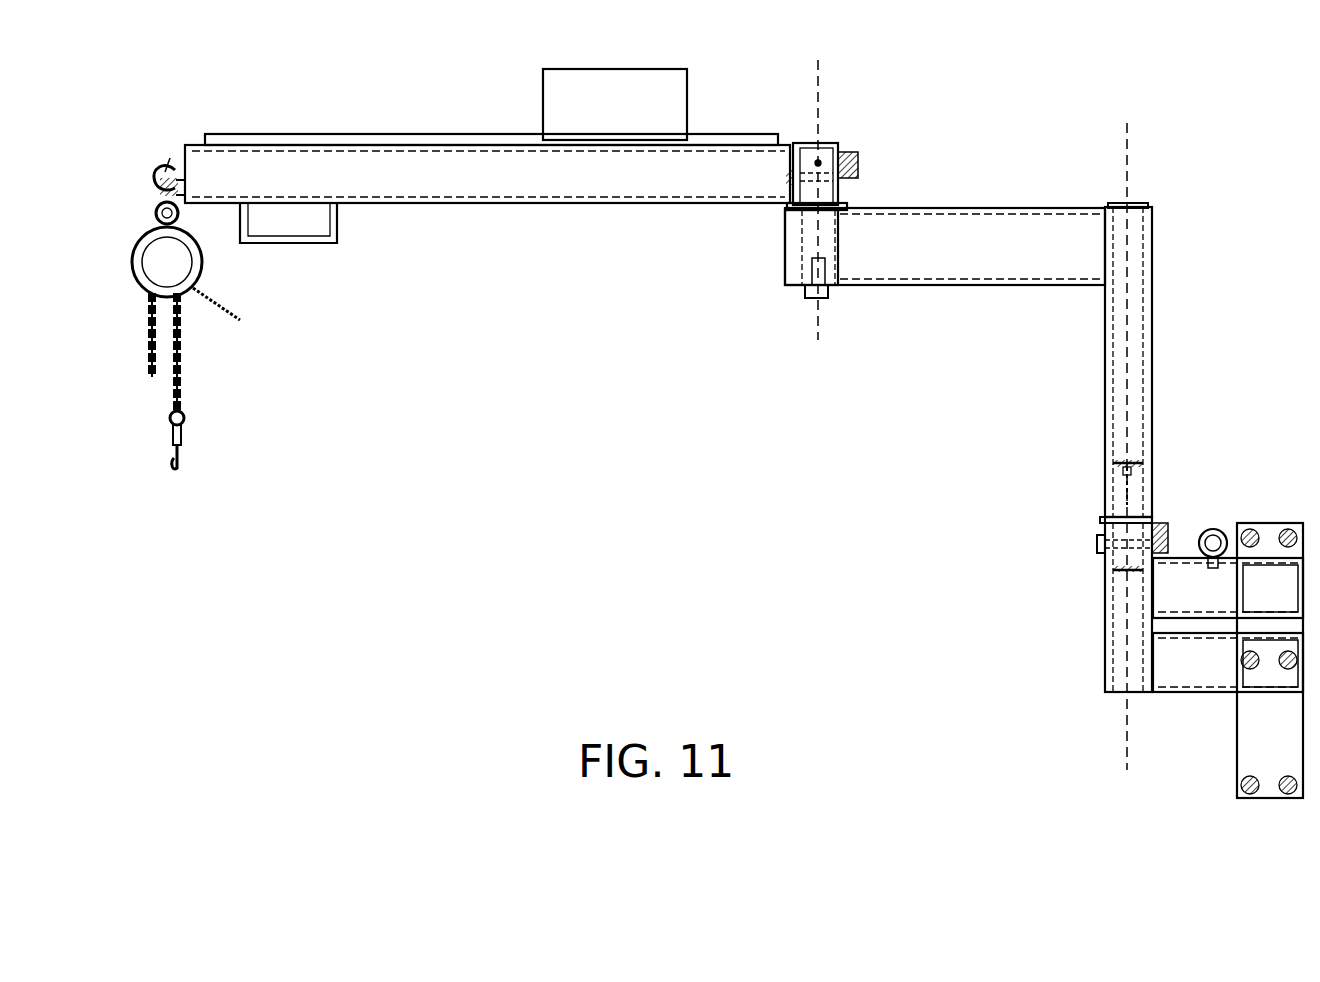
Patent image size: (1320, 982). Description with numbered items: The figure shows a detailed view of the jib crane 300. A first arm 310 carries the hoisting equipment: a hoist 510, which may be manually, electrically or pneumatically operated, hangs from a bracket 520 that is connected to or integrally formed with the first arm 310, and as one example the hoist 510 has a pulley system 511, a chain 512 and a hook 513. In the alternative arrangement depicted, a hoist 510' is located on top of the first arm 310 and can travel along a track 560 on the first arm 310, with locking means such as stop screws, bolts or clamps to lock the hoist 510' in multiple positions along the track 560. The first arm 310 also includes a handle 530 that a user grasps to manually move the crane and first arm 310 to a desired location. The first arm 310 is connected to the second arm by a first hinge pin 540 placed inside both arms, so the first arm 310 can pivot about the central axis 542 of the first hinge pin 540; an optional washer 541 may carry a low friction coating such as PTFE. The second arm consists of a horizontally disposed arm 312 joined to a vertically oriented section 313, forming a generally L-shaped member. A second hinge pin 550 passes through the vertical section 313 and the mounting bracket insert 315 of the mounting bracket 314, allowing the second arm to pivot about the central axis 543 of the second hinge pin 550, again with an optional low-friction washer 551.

The jib crane 300 is at (1196, 162).
The first arm 310 is at (521, 186).
The horizontally disposed arm 312 is at (982, 260).
The vertically oriented section 313 is at (1140, 318).
The mounting bracket 314 is at (1255, 748).
The mounting bracket insert 315 is at (1115, 648).
The hoist 510 is at (244, 313).
The hoist 510' is at (615, 104).
The pulley system 511 is at (162, 258).
The chain 512 is at (150, 352).
The hook 513 is at (180, 458).
The bracket 520 is at (172, 170).
The handle 530 is at (305, 245).
The first hinge pin 540 is at (798, 240).
The washer 541 is at (840, 200).
The central axis 542 is at (820, 78).
The central axis 543 is at (1127, 143).
The second hinge pin 550 is at (1135, 490).
The washer 551 is at (1105, 518).
The track 560 is at (420, 134).